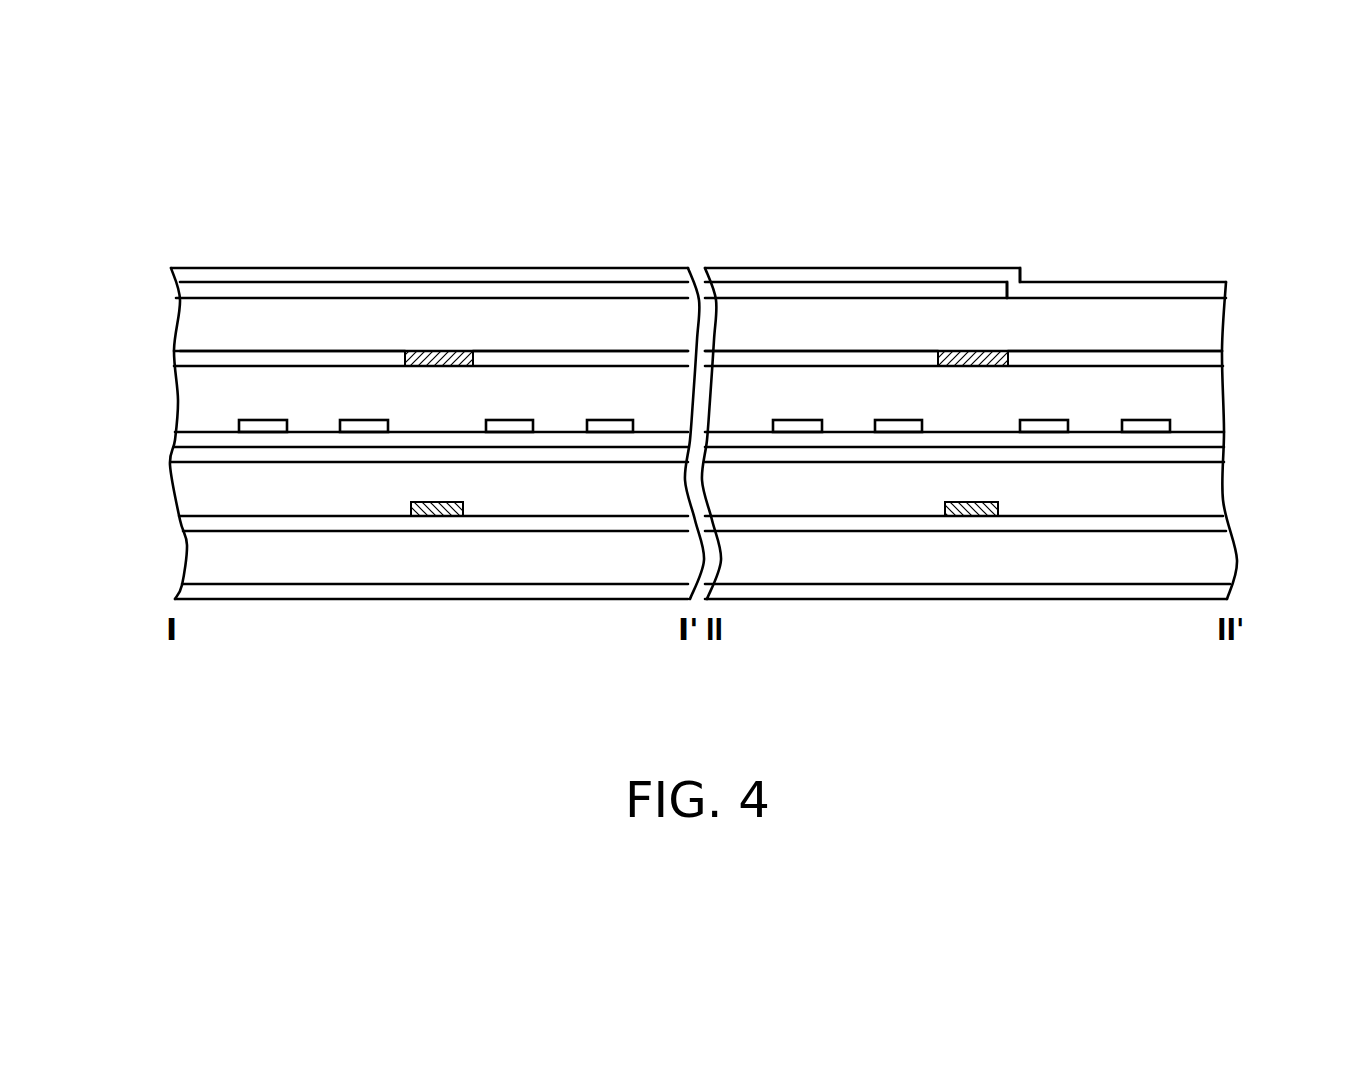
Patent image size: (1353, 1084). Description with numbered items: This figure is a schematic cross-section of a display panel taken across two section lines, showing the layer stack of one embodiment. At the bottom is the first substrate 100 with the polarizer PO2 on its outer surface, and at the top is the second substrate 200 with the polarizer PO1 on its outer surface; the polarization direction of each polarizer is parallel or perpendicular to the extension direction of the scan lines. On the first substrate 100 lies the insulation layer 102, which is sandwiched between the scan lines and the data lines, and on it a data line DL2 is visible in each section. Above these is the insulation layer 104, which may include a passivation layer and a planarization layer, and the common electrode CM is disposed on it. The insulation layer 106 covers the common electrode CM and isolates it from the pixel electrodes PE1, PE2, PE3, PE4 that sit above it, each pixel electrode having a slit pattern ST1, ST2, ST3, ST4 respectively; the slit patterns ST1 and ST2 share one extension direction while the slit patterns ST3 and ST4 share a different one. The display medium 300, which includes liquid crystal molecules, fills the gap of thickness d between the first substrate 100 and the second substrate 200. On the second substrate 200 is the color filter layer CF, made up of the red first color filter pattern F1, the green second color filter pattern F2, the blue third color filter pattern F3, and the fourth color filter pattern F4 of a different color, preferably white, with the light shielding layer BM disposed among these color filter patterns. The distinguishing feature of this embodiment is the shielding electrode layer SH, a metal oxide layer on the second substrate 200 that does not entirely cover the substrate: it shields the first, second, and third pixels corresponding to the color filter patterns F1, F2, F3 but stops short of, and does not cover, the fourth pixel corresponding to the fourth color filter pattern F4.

The polarizer PO1 is at (197, 278).
The polarizer PO2 is at (197, 593).
The second substrate 200 is at (1208, 312).
The color filter layer CF is at (161, 366).
The light shielding layer BM is at (450, 352).
The first color filter pattern F1 is at (258, 358).
The second color filter pattern F2 is at (613, 360).
The third color filter pattern F3 is at (795, 358).
The fourth color filter pattern F4 is at (1150, 358).
The display medium 300 is at (1212, 394).
The cell gap d is at (178, 432).
The insulation layer 106 is at (197, 443).
The common electrode CM is at (195, 457).
The insulation layer 104 is at (1207, 498).
The insulation layer 102 is at (1210, 521).
The first substrate 100 is at (1205, 555).
The pixel electrode PE1 is at (372, 430).
The pixel electrode PE2 is at (505, 430).
The pixel electrode PE3 is at (907, 430).
The pixel electrode PE4 is at (1037, 430).
The slit pattern ST1 is at (319, 410).
The slit pattern ST2 is at (569, 412).
The slit pattern ST3 is at (855, 412).
The slit pattern ST4 is at (1102, 412).
The shielding electrode layer SH is at (915, 292).
The data line DL2 is at (435, 510).